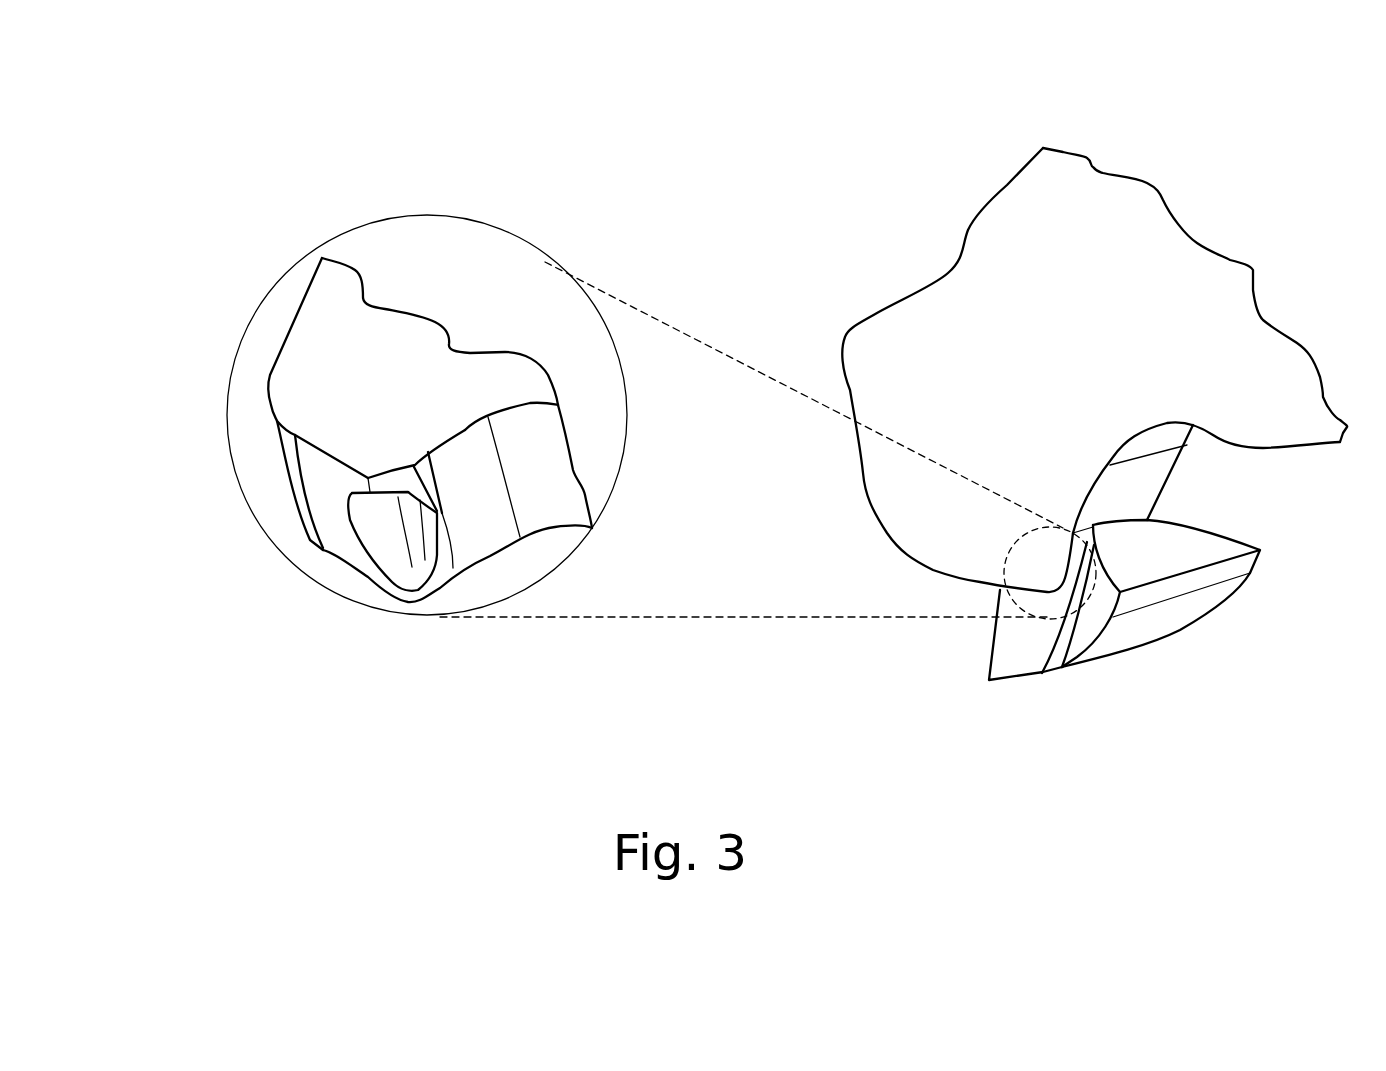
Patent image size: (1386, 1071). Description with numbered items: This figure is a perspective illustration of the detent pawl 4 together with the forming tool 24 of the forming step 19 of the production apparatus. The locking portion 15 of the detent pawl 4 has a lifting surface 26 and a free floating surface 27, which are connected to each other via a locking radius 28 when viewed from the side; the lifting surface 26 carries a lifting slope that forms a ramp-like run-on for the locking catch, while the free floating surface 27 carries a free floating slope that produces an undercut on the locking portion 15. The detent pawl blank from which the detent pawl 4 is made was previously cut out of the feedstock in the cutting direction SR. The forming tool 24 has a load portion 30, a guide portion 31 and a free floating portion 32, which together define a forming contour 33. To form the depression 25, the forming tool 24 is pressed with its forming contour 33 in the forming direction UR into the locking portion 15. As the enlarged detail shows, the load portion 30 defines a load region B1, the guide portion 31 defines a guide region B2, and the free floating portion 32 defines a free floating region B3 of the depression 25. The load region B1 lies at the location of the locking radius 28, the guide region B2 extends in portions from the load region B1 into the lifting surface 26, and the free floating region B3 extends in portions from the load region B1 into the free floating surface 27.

The detent pawl 4 is at (905, 247).
The locking portion 15 is at (883, 330).
The forming step 19 is at (1013, 252).
The forming tool 24 is at (1155, 650).
The depression 25 is at (1060, 607).
The lifting surface 26 is at (447, 563).
The free floating surface 27 is at (325, 482).
The locking radius 28 is at (405, 490).
The load portion 30 is at (1047, 672).
The guide portion 31 is at (1093, 607).
The free floating portion 32 is at (998, 680).
The forming contour 33 is at (1010, 637).
The cutting direction SR is at (917, 522).
The forming direction UR is at (1060, 757).
The load region B1 is at (418, 567).
The guide region B2 is at (440, 513).
The free floating region B3 is at (385, 535).